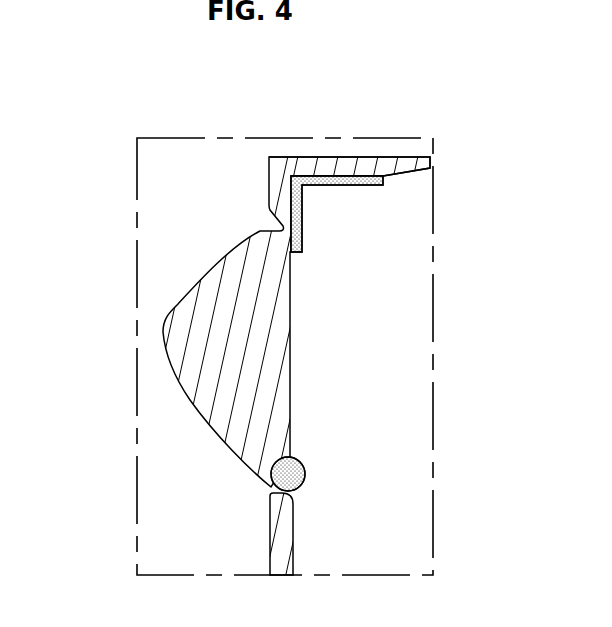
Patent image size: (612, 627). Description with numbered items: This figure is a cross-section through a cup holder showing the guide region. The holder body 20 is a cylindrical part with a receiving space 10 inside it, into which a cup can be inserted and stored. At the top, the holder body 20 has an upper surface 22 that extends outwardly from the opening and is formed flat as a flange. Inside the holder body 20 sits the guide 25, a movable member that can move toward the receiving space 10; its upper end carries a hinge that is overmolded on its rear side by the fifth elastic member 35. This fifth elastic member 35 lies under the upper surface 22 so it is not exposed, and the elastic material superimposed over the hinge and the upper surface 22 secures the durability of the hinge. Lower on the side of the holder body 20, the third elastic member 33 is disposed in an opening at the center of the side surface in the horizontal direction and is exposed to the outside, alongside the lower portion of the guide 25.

The receiving space 10 is at (200, 510).
The holder body 20 is at (285, 550).
The upper surface 22 is at (348, 162).
The guide 25 is at (158, 296).
The third elastic member 33 is at (304, 473).
The fifth elastic member 35 is at (297, 218).